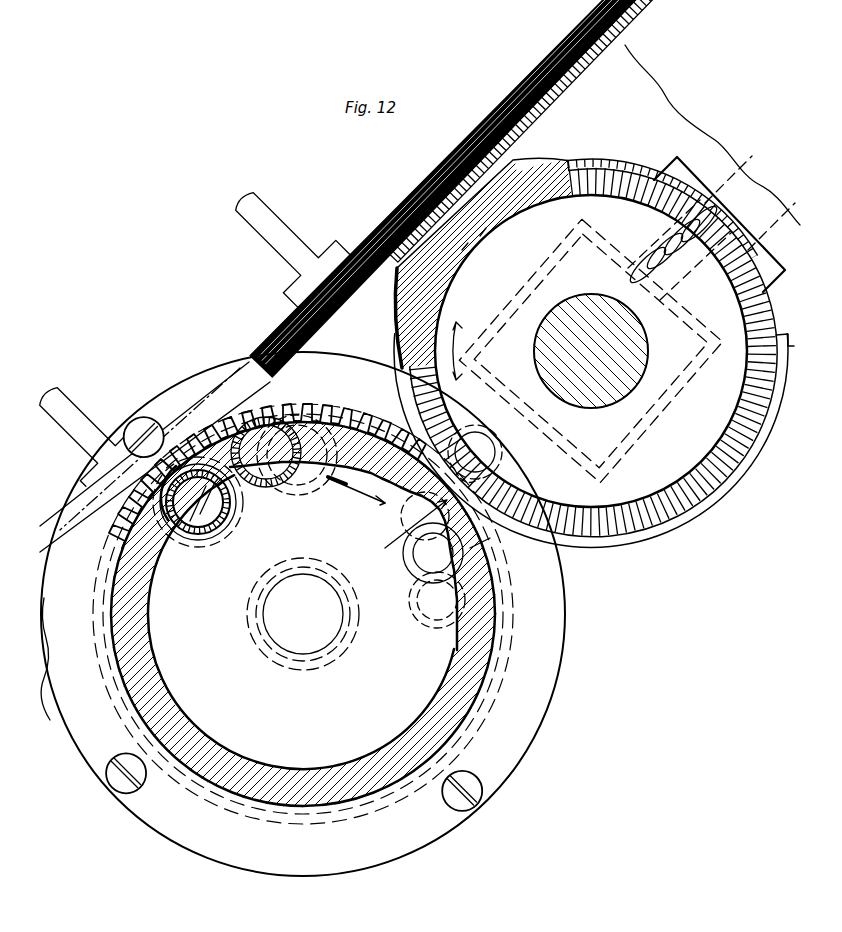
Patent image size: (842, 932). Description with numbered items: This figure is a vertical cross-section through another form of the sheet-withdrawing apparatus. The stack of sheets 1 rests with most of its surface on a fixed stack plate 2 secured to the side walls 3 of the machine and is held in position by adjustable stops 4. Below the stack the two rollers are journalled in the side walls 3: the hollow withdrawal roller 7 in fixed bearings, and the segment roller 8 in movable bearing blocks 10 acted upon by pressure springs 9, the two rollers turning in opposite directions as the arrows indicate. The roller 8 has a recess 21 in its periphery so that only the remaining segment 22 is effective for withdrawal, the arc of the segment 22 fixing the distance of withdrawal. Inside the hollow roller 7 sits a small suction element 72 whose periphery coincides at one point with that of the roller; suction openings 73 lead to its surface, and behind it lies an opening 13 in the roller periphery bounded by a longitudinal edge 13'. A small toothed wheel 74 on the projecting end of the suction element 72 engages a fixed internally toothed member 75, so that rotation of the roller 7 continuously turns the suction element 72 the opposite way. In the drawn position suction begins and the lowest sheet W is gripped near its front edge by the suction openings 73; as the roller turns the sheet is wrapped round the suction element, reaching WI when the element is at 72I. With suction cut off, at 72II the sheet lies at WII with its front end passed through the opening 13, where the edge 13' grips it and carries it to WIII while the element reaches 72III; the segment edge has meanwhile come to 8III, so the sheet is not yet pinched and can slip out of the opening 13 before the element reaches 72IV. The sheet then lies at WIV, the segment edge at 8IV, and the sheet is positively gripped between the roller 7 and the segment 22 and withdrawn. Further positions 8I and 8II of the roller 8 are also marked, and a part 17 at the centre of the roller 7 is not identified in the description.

The stack of sheets 1 is at (487, 140).
The fixed stack plate 2 is at (566, 108).
The side walls of the machine 3 is at (655, 83).
The adjustable stops 4 is at (290, 234).
The hollow withdrawal roller 7 is at (257, 773).
The segment roller 8 is at (667, 524).
The ring housing position I 8I is at (486, 230).
The ring housing position II 8II is at (465, 255).
The position of the segment leading edge 8III is at (420, 428).
The position of the segment edge 8IV is at (470, 472).
The pressure springs 9 is at (698, 282).
The movable bearing blocks 10 is at (682, 408).
The roller opening 13 is at (198, 541).
The longitudinal edge of the roller opening 13' is at (195, 534).
The hub 17 is at (346, 618).
The recess 21 is at (715, 490).
The segment 22 is at (782, 330).
The suction element 72 is at (262, 487).
The first position of the suction element 72I is at (290, 480).
The second position of the suction element 72II is at (327, 480).
The third position of the suction element 72III is at (414, 560).
The fourth position of the suction element 72IV is at (435, 616).
The suction openings 73 is at (168, 450).
The small toothed wheel 74 is at (225, 546).
The internally toothed member 75 is at (208, 378).
The lowest sheet W is at (286, 398).
The first sheet position WI is at (304, 383).
The second sheet position WII is at (316, 371).
The third sheet position WIII is at (409, 528).
The fourth sheet position WIV is at (497, 540).